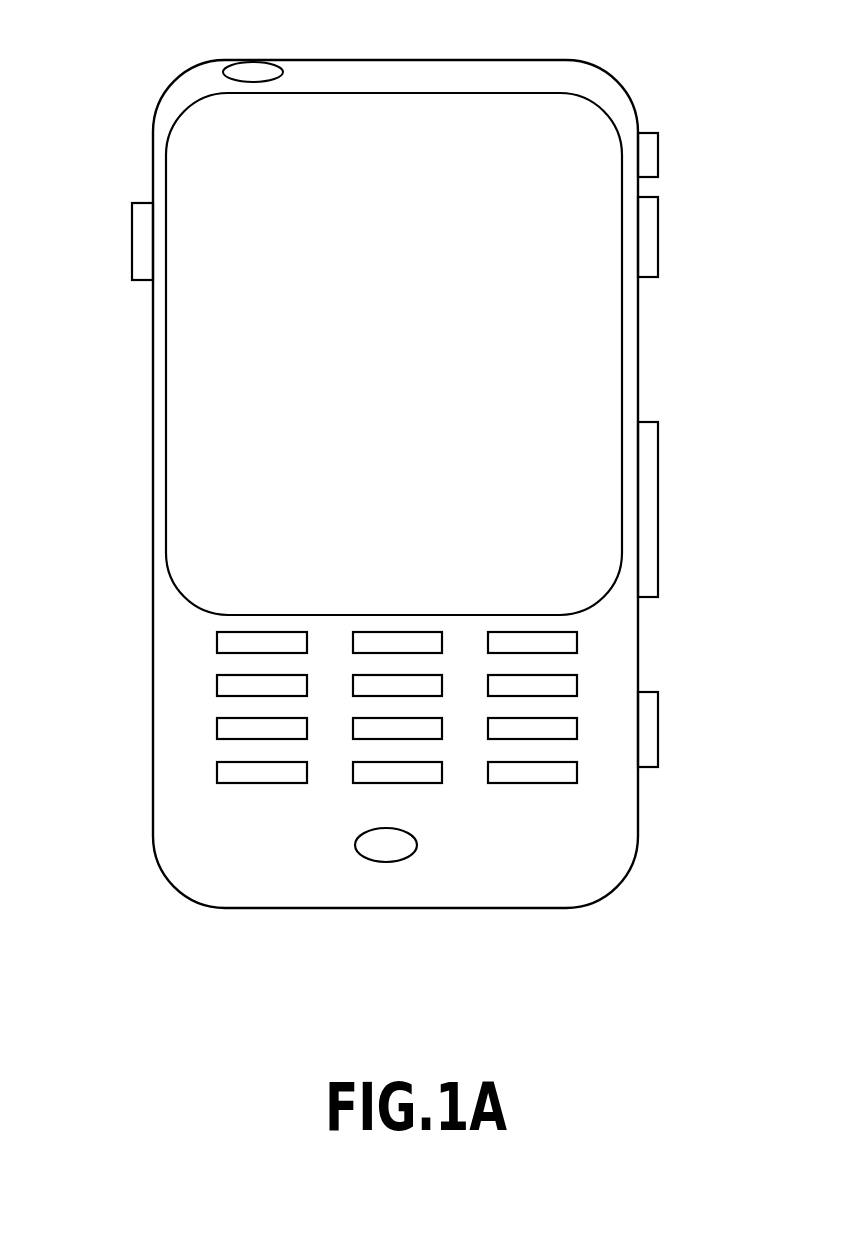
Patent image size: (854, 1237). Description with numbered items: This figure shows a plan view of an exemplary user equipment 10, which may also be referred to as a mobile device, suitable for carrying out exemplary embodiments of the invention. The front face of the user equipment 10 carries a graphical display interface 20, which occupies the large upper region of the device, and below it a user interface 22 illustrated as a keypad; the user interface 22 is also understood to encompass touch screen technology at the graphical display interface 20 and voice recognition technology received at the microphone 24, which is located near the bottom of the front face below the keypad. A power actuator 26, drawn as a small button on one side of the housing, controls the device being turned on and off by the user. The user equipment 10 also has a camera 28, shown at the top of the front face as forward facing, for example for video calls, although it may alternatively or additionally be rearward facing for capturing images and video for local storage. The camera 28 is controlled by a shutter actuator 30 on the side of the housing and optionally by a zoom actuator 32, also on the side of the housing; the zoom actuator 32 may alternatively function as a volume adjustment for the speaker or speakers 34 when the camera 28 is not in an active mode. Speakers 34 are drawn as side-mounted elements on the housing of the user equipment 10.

The user equipment 10 is at (633, 963).
The graphical display interface 20 is at (198, 375).
The user interface 22 is at (198, 793).
The microphone 24 is at (386, 848).
The power actuator 26 is at (651, 150).
The camera 28 is at (258, 66).
The shutter actuator 30 is at (651, 720).
The zoom actuator 32 is at (651, 480).
The speaker 34 is at (651, 228).